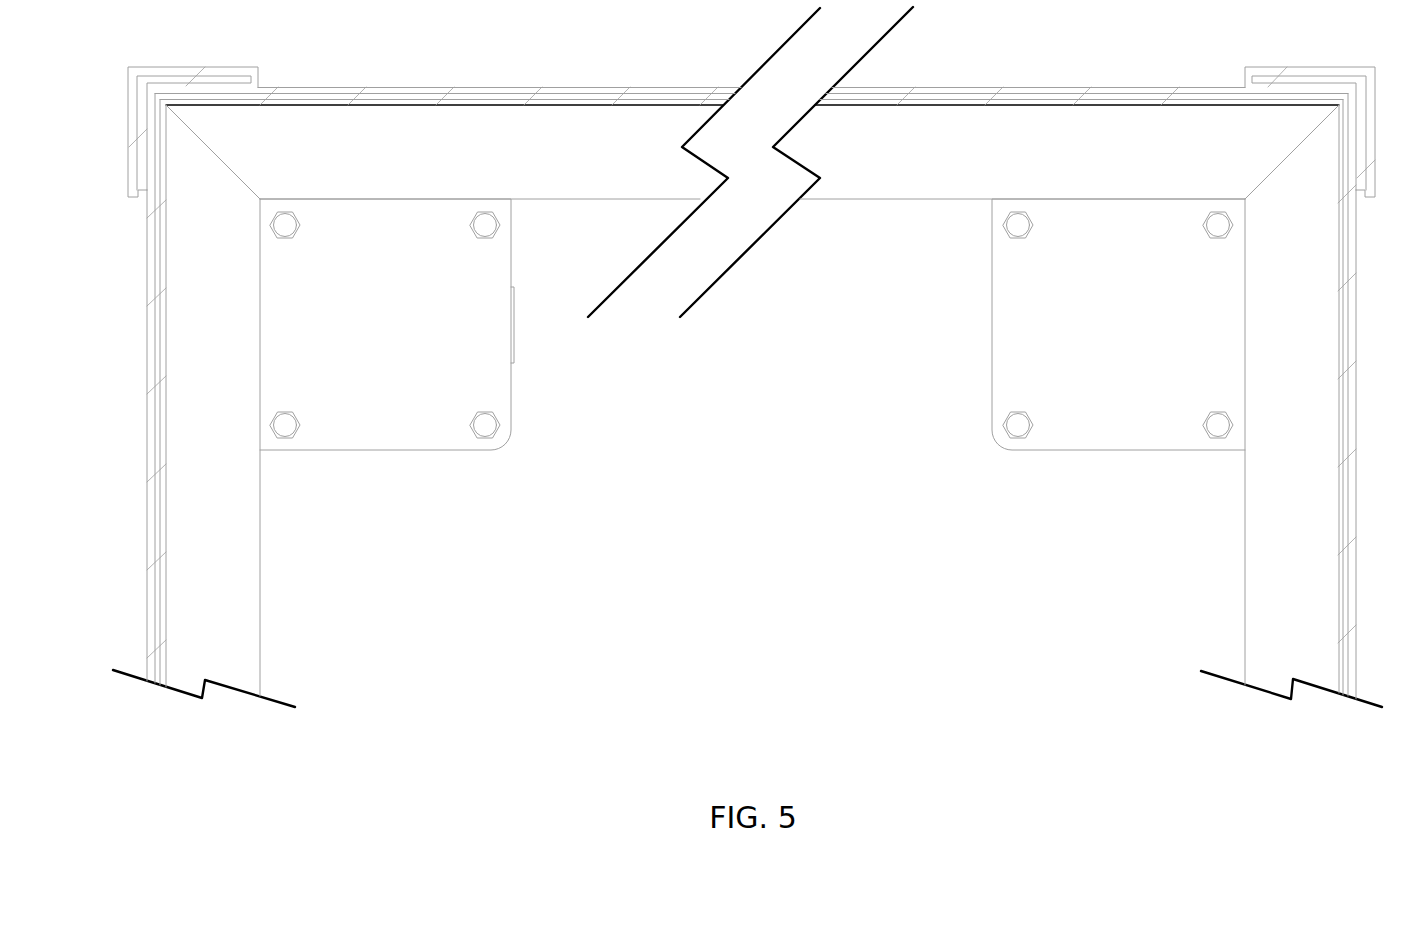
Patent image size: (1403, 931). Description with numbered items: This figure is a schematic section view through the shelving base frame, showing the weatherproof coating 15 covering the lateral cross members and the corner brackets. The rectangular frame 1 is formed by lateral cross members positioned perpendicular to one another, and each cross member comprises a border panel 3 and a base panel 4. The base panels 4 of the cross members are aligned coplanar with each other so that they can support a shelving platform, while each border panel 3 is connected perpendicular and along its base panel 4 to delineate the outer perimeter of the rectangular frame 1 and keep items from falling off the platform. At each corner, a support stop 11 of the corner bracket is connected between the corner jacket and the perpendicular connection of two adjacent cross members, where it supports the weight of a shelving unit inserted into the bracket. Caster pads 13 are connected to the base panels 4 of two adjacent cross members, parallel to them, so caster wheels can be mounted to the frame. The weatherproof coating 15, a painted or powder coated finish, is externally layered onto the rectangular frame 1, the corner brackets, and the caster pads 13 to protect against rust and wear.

The rectangular frame 1 is at (752, 357).
The border panel 3 is at (475, 97).
The base panel 4 is at (256, 532).
The support stop 11 is at (218, 92).
The caster pads 13 is at (422, 448).
The weatherproof coating 15 is at (320, 93).